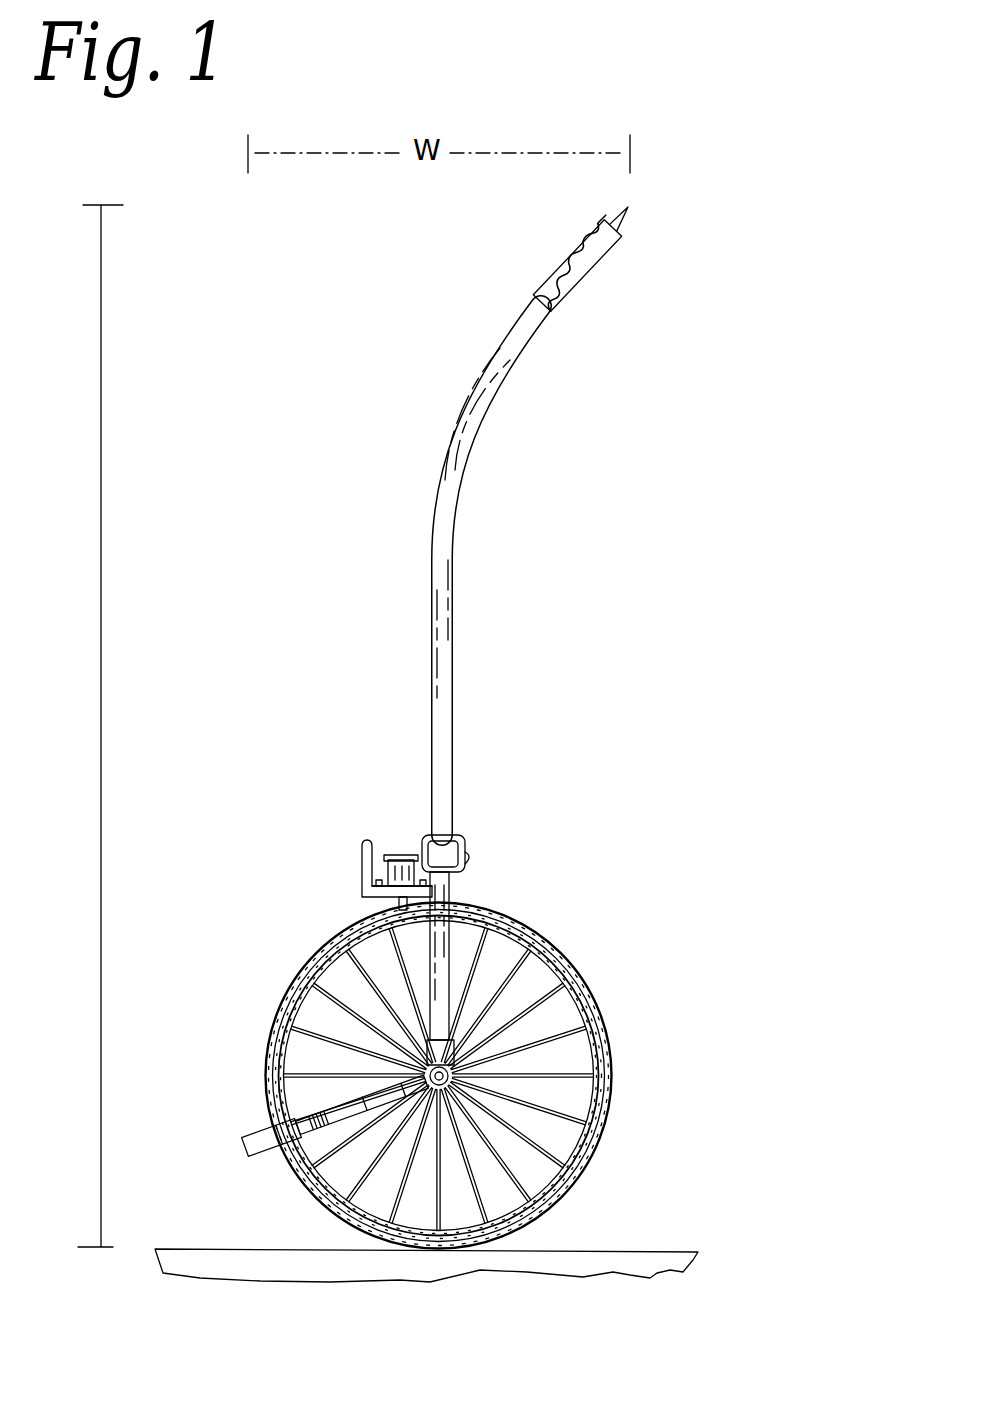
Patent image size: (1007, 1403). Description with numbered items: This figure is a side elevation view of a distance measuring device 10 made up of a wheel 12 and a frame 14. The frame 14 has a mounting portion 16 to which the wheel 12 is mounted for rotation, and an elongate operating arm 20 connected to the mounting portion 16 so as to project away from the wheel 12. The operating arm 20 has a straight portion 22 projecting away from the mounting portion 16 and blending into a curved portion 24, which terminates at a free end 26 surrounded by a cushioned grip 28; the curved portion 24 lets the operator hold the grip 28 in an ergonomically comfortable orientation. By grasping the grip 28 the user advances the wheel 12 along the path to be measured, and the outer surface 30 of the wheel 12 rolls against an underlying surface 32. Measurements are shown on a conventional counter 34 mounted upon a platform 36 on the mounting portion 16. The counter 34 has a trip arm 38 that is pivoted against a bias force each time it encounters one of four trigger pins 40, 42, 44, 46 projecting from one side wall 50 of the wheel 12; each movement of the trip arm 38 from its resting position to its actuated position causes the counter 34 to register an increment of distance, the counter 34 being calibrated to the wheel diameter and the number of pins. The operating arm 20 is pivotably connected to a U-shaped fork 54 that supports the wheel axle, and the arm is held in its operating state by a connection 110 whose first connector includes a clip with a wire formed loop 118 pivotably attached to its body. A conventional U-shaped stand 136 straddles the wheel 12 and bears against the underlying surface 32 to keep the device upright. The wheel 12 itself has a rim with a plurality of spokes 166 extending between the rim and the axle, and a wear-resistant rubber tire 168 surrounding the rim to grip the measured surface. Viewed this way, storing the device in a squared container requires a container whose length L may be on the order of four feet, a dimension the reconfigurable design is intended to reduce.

The distance measuring device 10 is at (305, 690).
The wheel 12 is at (481, 1040).
The frame 14 is at (460, 756).
The mounting portion 16 is at (456, 922).
The elongate operating arm 20 is at (457, 612).
The straight portion 22 is at (430, 590).
The curved portion 24 is at (452, 432).
The free end 26 is at (555, 283).
The cushioned grip 28 is at (590, 285).
The outer surface 30 is at (612, 1110).
The underlying surface 32 is at (632, 1248).
The counter 34 is at (395, 852).
The platform 36 is at (368, 855).
The trip arm 38 is at (380, 896).
The trigger pin 40 is at (268, 992).
The trigger pin 42 is at (618, 1040).
The trigger pin 44 is at (598, 1150).
The trigger pin 46 is at (272, 1108).
The side wall 50 is at (565, 1030).
The U-shaped fork 54 is at (584, 950).
The connection 110 is at (468, 836).
The wire formed loop 118 is at (466, 860).
The U-shaped stand 136 is at (283, 1150).
The spokes 166 is at (612, 1005).
The rubber tire 168 is at (345, 975).
The length dimension L is at (100, 726).